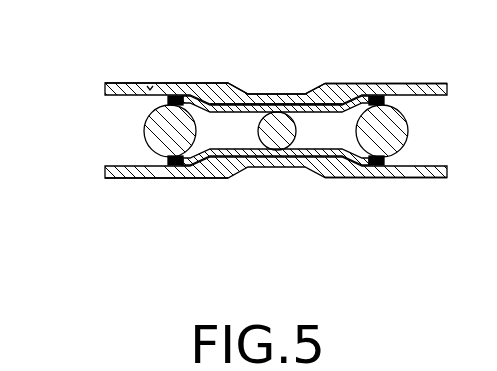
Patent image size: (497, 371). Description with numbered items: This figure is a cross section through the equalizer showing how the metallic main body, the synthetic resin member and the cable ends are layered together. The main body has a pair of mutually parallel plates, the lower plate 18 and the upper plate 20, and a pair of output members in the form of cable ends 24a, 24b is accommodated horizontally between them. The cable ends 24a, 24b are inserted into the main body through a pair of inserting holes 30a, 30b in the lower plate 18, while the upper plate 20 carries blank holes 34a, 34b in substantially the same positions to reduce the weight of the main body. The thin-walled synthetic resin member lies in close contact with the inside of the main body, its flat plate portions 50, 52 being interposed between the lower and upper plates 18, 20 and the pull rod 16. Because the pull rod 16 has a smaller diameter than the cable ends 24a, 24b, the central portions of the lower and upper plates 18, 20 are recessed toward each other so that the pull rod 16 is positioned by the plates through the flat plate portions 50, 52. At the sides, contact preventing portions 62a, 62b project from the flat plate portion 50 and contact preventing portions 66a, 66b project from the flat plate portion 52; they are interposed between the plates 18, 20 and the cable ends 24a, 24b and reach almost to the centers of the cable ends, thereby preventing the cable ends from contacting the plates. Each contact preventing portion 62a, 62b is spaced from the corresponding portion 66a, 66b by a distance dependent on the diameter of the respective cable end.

The pull rod 16 is at (282, 100).
The lower plate 18 is at (120, 167).
The upper plate 20 is at (122, 84).
The cable end 24a is at (382, 133).
The cable end 24b is at (165, 136).
The inserting hole 30a is at (406, 174).
The inserting hole 30b is at (150, 173).
The blank hole 34a is at (395, 88).
The blank hole 34b is at (150, 88).
The flat plate portion 50 is at (284, 152).
The flat plate portion 52 is at (248, 97).
The contact preventing portion 62a is at (369, 163).
The contact preventing portion 62b is at (177, 163).
The contact preventing portion 66a is at (370, 97).
The contact preventing portion 66b is at (183, 97).